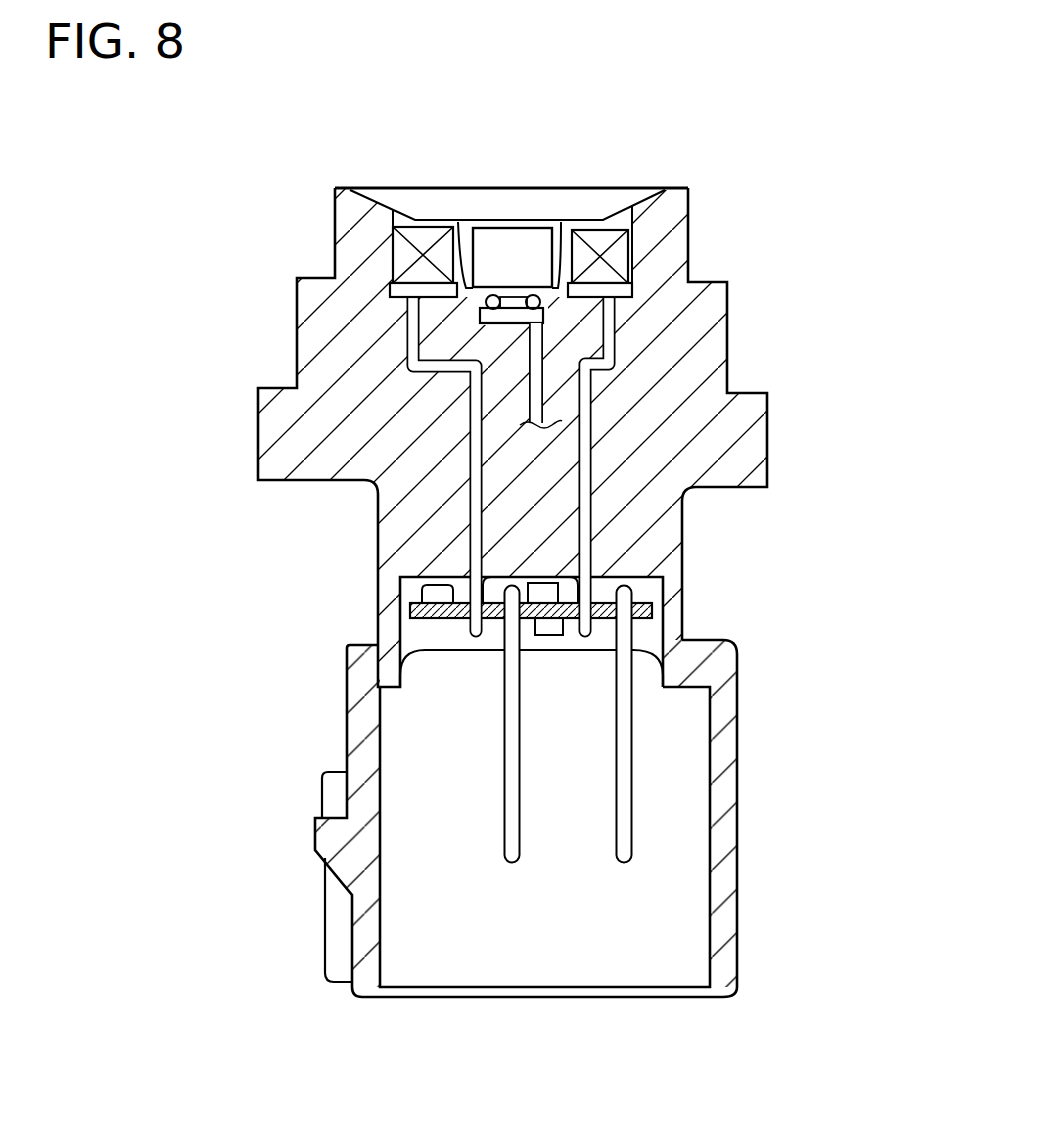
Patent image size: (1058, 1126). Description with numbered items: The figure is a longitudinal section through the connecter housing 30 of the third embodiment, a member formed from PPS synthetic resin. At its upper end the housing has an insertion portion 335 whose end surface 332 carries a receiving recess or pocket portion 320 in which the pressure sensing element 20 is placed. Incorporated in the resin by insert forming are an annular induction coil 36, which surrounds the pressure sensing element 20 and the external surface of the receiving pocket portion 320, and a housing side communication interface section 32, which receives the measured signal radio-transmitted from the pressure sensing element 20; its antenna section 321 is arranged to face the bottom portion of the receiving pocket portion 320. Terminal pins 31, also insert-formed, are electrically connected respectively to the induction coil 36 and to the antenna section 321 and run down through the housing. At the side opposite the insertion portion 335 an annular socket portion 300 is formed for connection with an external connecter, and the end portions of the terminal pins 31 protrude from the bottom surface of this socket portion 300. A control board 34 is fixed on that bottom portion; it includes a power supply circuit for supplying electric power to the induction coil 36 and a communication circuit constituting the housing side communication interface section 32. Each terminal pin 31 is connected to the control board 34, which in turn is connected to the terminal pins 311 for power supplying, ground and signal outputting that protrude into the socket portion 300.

The pressure sensing element 20 is at (505, 250).
The connecter housing 30 is at (740, 152).
The terminal pins 31 is at (478, 523).
The housing side communication interface section 32 is at (510, 327).
The control board 34 is at (635, 622).
The annular induction coil 36 is at (616, 257).
The socket portion 300 is at (742, 820).
The terminal pins 311 is at (513, 866).
The receiving pocket portion 320 is at (560, 240).
The antenna section 321 is at (543, 302).
The end surface 332 is at (512, 172).
The insertion portion 335 is at (298, 447).